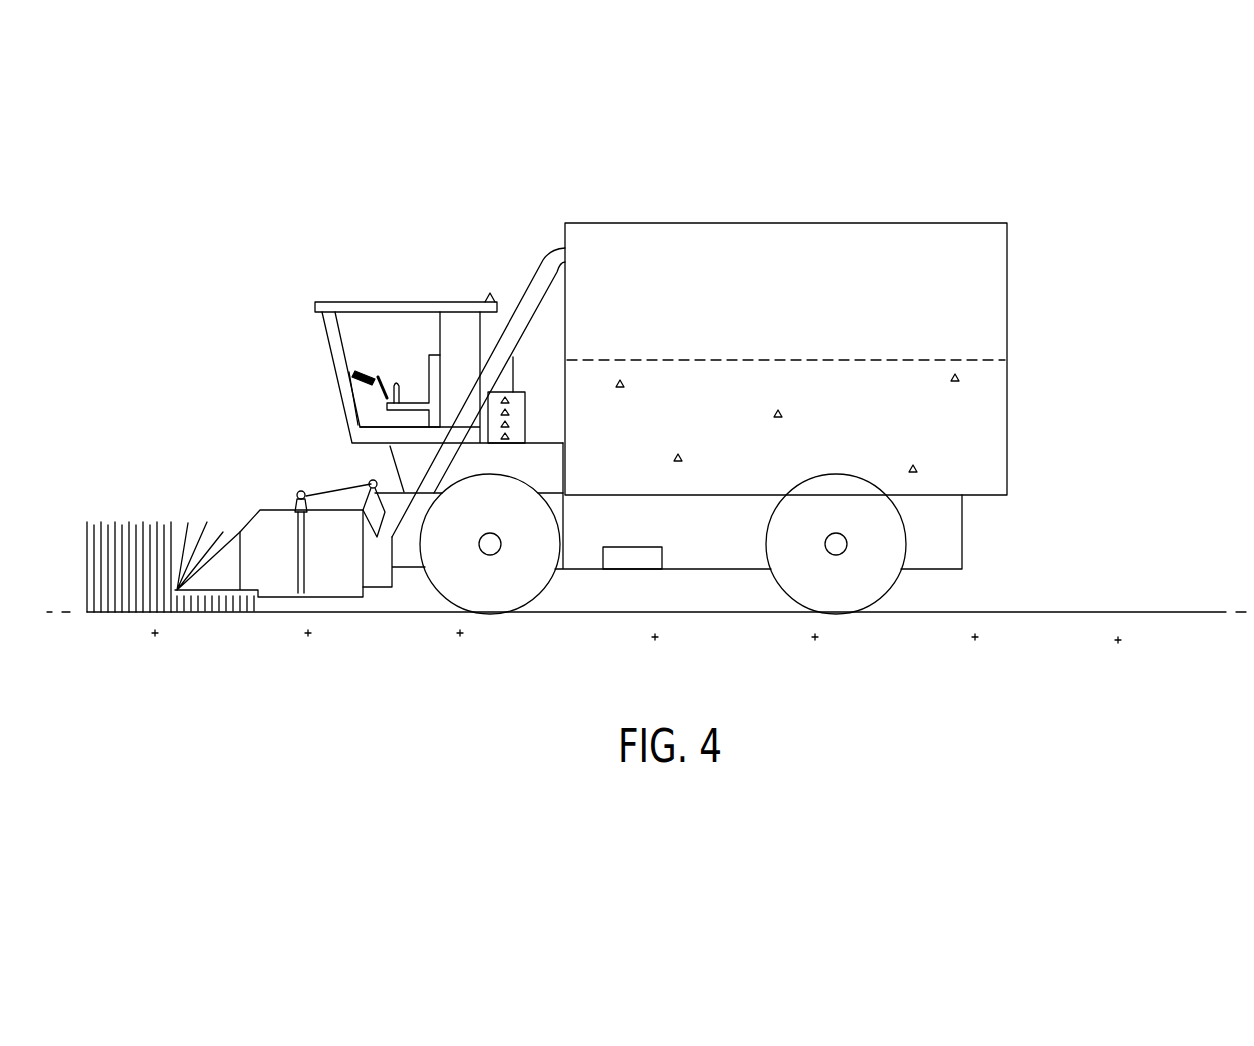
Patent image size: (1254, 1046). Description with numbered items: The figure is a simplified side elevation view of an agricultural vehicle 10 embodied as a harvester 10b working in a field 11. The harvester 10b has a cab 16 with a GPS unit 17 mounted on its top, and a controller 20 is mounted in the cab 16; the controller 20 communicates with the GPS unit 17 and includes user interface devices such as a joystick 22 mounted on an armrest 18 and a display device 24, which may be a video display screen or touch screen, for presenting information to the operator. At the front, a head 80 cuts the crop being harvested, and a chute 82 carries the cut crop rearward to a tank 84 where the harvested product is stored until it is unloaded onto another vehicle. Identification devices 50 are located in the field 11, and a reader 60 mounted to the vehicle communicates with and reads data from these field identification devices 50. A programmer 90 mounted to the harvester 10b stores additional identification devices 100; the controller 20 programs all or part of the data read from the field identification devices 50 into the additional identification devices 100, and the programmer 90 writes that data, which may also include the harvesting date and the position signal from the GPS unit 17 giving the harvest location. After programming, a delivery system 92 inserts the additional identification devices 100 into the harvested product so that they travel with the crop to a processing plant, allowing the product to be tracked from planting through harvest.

The agricultural vehicle 10 is at (351, 182).
The harvester 10b is at (368, 301).
The field 11 is at (1029, 699).
The cab 16 is at (343, 288).
The GPS unit 17 is at (488, 286).
The armrest 18 is at (416, 384).
The controller 20 is at (392, 363).
The joystick 22 is at (397, 382).
The display device 24 is at (380, 375).
The identification devices 50 is at (157, 637).
The reader 60 is at (663, 560).
The head 80 is at (245, 503).
The chute 82 is at (540, 260).
The tank 84 is at (787, 223).
The programmer 90 is at (527, 403).
The delivery system 92 is at (513, 362).
The additional identification devices 100 is at (510, 438).